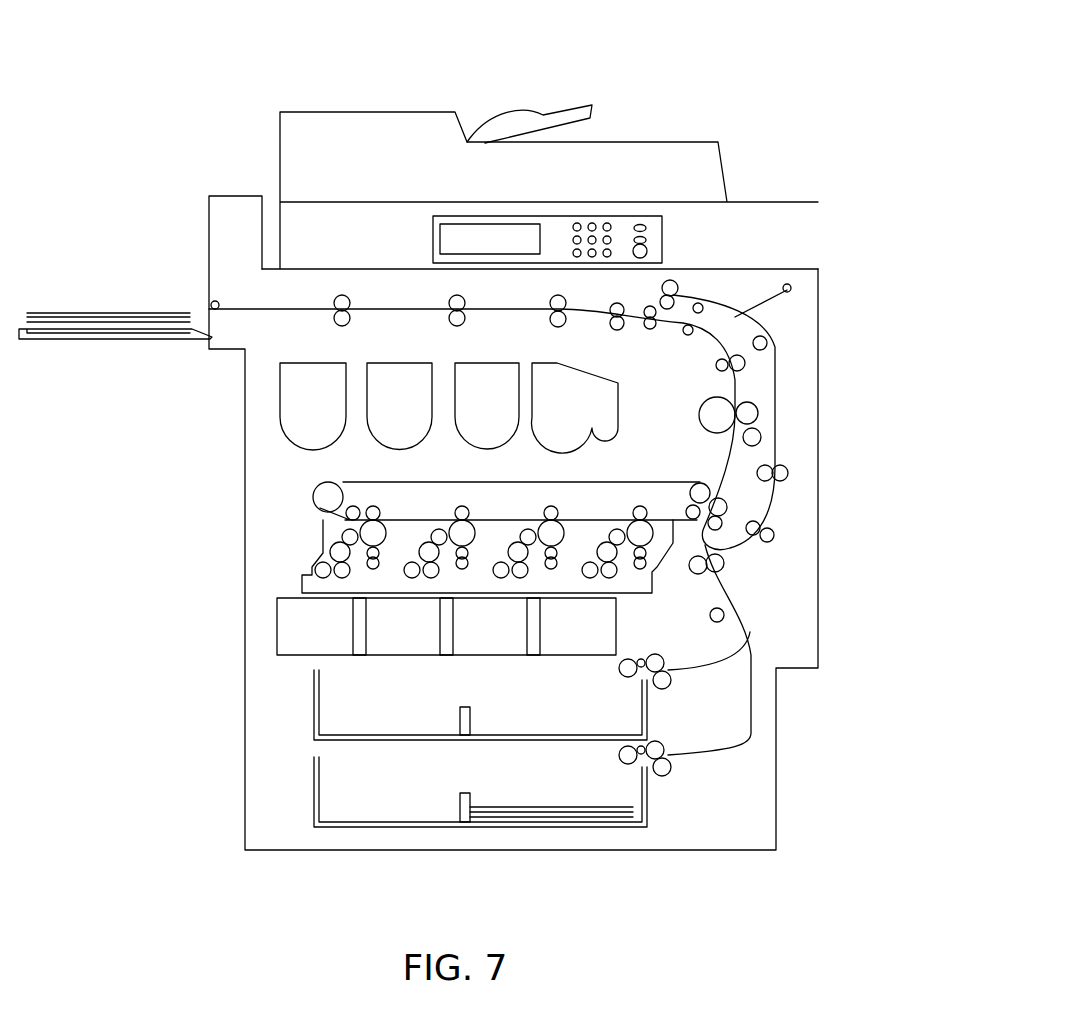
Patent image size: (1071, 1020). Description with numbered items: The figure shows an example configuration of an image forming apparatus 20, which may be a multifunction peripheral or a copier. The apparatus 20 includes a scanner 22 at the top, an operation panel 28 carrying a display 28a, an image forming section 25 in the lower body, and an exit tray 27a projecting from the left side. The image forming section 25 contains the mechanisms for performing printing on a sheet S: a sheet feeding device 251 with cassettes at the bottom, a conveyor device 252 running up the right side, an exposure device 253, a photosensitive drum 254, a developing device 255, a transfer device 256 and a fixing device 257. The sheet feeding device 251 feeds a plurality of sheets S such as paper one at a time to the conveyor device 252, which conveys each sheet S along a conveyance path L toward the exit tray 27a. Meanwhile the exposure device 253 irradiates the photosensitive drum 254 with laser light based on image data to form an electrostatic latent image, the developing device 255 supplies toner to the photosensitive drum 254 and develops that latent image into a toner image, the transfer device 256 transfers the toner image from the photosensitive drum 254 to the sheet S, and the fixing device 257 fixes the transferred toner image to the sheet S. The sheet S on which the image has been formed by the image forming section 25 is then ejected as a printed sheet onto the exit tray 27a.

The image forming apparatus 20 is at (716, 88).
The scanner 22 is at (830, 244).
The image forming section 25 is at (809, 706).
The exit tray 27a is at (127, 336).
The operation panel 28 is at (665, 238).
The display 28a is at (478, 236).
The sheet conveying path L is at (400, 298).
The sheet feeding device 251 is at (289, 749).
The conveyor device 252 is at (762, 605).
The exposure device 253 is at (288, 622).
The photosensitive drum 254 is at (384, 537).
The developing device 255 is at (341, 536).
The transfer device 256 is at (290, 488).
The fixing device 257 is at (691, 441).
The sheet S is at (503, 805).